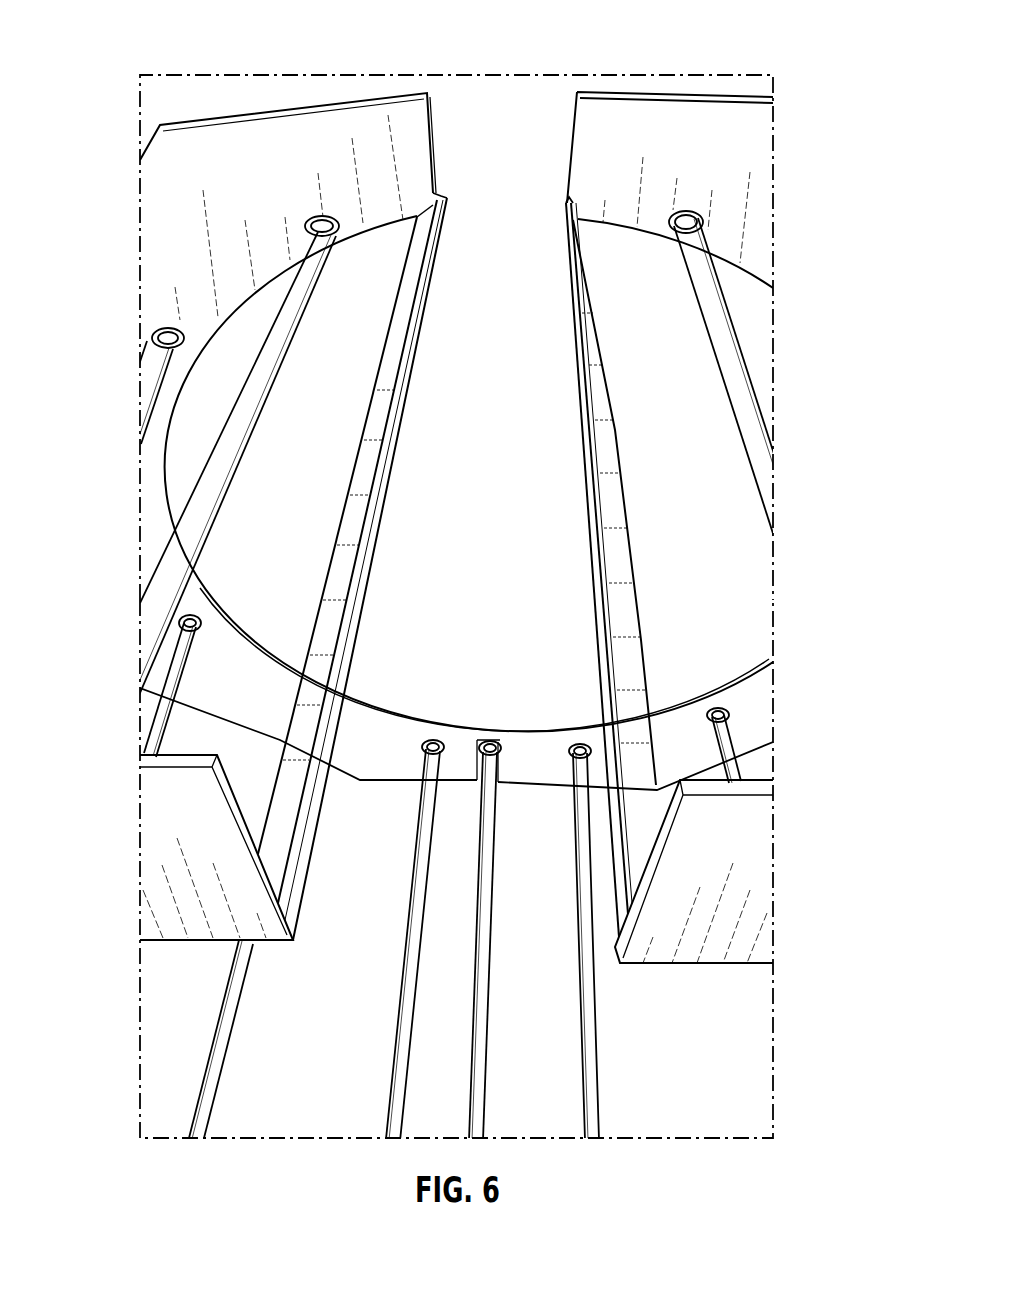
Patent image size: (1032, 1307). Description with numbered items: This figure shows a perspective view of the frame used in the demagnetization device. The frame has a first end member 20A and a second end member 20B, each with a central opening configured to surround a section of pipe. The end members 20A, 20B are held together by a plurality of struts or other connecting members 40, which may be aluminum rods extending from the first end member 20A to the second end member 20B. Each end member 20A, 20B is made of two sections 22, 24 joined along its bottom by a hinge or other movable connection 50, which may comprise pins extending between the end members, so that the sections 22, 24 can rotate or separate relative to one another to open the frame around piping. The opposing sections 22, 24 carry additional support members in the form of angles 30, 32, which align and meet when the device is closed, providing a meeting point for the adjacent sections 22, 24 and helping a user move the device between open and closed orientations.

The first end member 20A is at (776, 828).
The second end member 20B is at (776, 119).
The section 22 is at (727, 217).
The section 24 is at (242, 165).
The angle 30 is at (605, 463).
The angle 32 is at (370, 527).
The connecting members 40 is at (743, 382).
The movable connection 50 is at (478, 962).